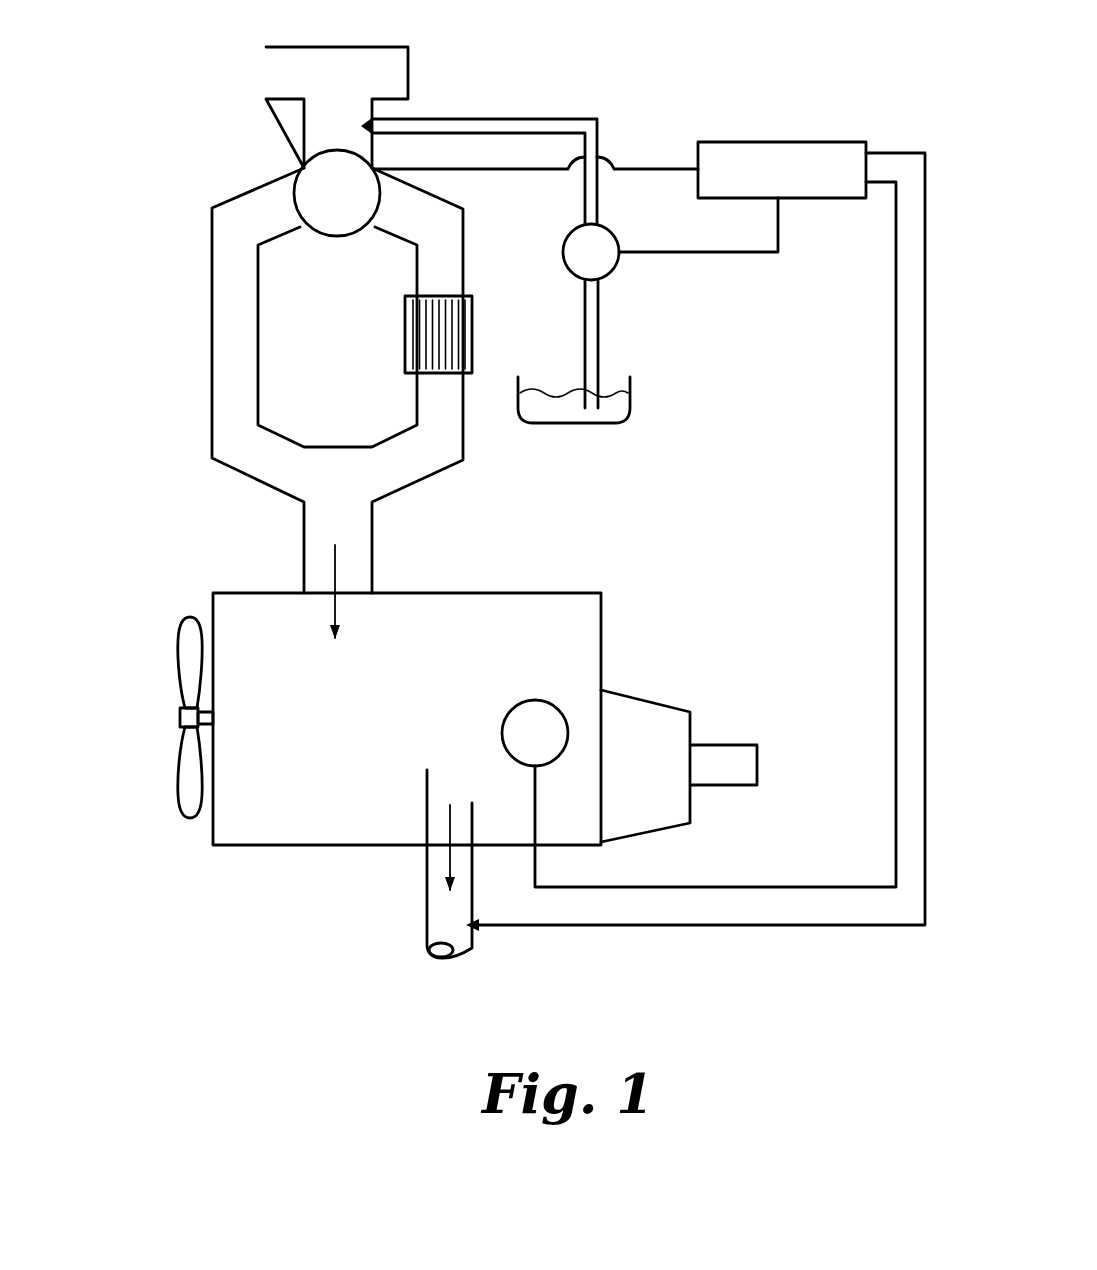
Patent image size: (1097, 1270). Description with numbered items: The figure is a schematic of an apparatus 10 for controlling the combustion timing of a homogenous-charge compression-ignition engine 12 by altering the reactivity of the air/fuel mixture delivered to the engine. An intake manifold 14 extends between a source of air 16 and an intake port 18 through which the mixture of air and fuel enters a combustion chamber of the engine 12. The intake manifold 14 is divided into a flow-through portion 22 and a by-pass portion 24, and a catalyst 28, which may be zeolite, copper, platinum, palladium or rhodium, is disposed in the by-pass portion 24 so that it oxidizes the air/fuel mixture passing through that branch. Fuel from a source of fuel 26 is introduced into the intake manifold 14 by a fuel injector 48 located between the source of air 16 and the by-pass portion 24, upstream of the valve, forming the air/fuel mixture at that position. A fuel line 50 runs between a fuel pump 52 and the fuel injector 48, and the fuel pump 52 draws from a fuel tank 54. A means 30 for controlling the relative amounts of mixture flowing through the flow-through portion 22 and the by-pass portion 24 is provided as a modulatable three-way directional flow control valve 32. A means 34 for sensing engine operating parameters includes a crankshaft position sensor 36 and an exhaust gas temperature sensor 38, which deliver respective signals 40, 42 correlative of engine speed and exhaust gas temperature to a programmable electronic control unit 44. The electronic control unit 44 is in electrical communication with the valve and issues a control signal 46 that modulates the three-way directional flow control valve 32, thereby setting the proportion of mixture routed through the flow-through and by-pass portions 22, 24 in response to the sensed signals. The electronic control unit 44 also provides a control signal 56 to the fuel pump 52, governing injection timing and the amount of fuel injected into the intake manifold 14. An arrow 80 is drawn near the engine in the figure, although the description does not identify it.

The apparatus 10 is at (183, 193).
The homogenous-charge compression-ignition engine 12 is at (359, 732).
The intake manifold 14 is at (190, 445).
The source of air 16 is at (360, 47).
The intake port 18 is at (352, 592).
The flow-through portion 22 is at (222, 349).
The by-pass portion 24 is at (438, 447).
The source of fuel 26 is at (642, 140).
The catalyst 28 is at (413, 332).
The means for controlling relative amounts of mixture 30 is at (265, 152).
The modulatable three-way directional flow control valve 32 is at (324, 205).
The means for sensing engine operating parameter 34 is at (538, 940).
The crankshaft position sensor 36 is at (522, 745).
The exhaust gas temperature sensor 38 is at (427, 900).
The signal 40 is at (748, 887).
The signal 42 is at (748, 925).
The electronic control unit 44 is at (768, 182).
The control signal 46 is at (685, 255).
The fuel injector 48 is at (360, 127).
The fuel line 50 is at (480, 118).
The fuel pump 52 is at (578, 264).
The fuel tank 54 is at (565, 422).
The control signal 56 is at (485, 172).
The direction arrow 80 is at (648, 570).